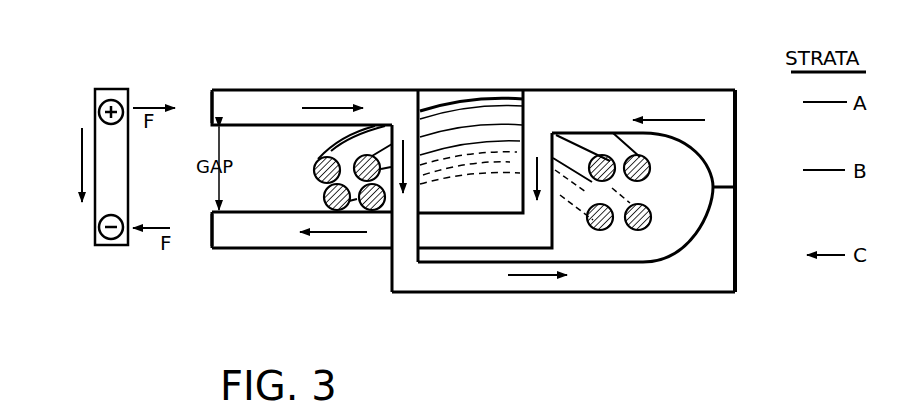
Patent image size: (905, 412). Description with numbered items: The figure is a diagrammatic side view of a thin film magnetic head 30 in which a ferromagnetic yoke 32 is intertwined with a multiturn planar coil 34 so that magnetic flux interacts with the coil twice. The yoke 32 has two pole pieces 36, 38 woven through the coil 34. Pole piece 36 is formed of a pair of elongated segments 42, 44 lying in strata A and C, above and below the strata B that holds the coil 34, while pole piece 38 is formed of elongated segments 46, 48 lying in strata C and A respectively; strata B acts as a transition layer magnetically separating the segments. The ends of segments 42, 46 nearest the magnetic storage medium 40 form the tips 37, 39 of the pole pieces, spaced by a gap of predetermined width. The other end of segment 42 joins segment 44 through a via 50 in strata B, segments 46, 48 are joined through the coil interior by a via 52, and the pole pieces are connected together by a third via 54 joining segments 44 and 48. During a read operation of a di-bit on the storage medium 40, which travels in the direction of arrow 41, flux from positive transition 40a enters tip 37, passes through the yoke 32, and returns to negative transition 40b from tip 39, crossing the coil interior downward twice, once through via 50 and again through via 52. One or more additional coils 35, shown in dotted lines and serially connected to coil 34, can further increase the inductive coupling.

The thin film magnetic head 30 is at (475, 184).
The yoke 32 is at (682, 300).
The multiturn planar coil 34 is at (472, 129).
The additional coil 35 is at (485, 176).
The pole piece 36 is at (454, 191).
The tip 37 is at (213, 118).
The pole piece 38 is at (439, 171).
The tip 39 is at (213, 243).
The magnetic storage medium 40 is at (84, 191).
The positive transition 40a is at (98, 118).
The negative transition 40b is at (99, 220).
The arrow 41 is at (82, 148).
The elongated segment 42 is at (380, 191).
The elongated segment 44 is at (495, 282).
The elongated segment 46 is at (350, 240).
The elongated segment 48 is at (558, 100).
The via 50 is at (404, 228).
The via 52 is at (543, 218).
The third via 54 is at (715, 187).